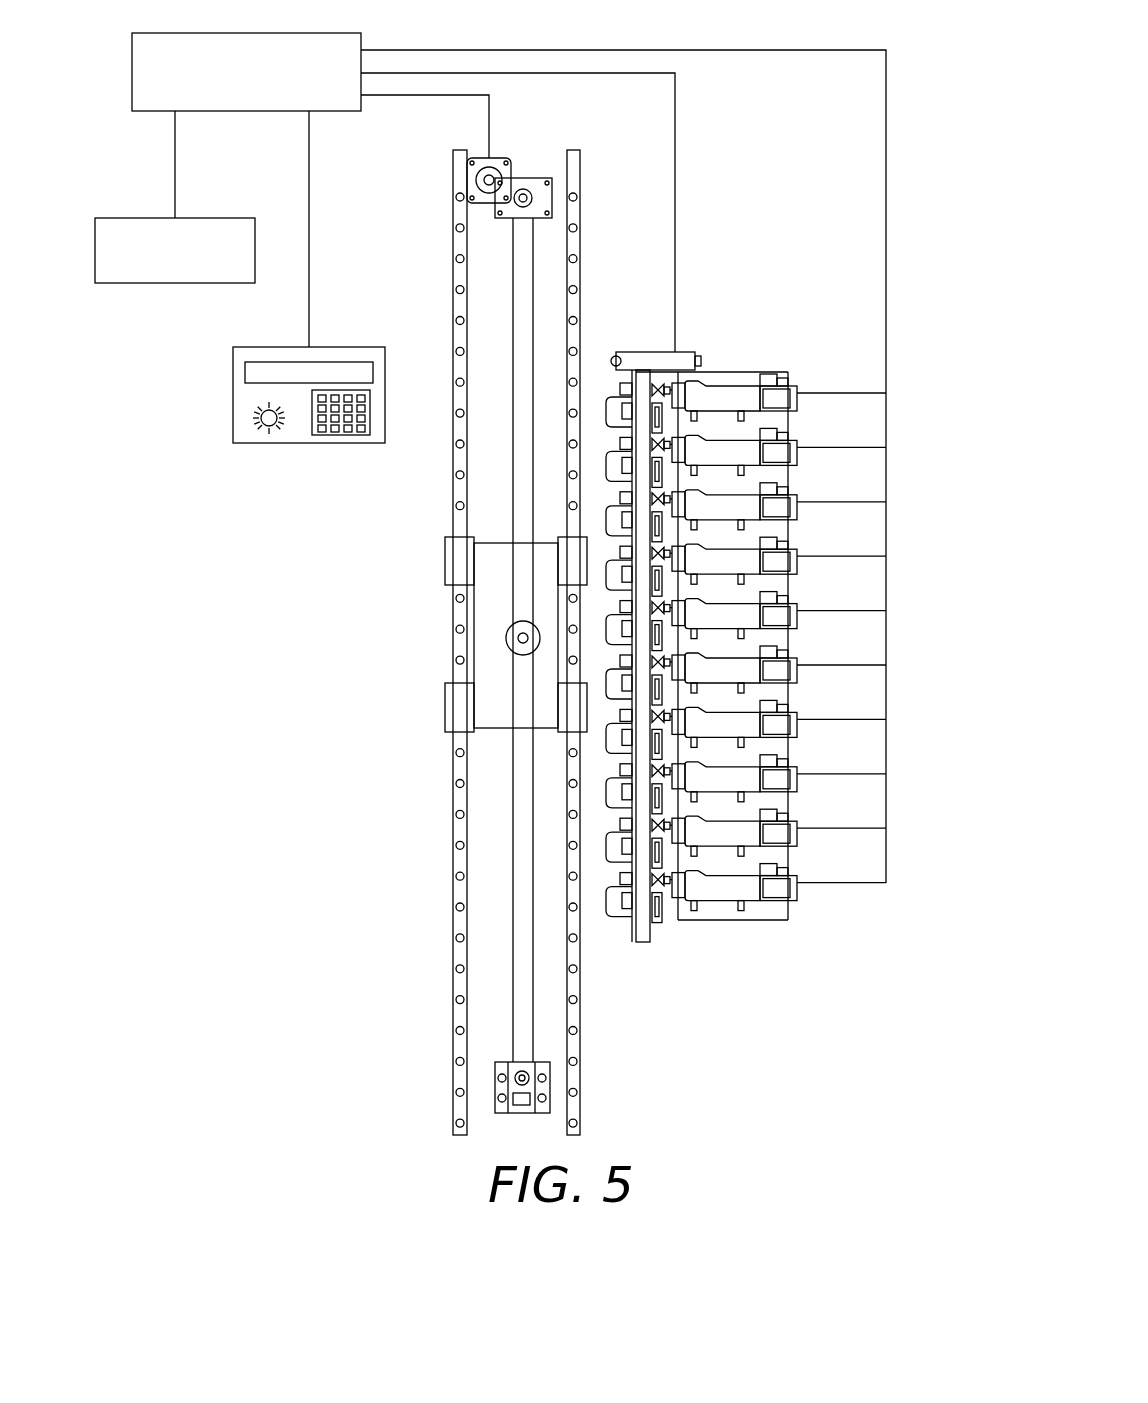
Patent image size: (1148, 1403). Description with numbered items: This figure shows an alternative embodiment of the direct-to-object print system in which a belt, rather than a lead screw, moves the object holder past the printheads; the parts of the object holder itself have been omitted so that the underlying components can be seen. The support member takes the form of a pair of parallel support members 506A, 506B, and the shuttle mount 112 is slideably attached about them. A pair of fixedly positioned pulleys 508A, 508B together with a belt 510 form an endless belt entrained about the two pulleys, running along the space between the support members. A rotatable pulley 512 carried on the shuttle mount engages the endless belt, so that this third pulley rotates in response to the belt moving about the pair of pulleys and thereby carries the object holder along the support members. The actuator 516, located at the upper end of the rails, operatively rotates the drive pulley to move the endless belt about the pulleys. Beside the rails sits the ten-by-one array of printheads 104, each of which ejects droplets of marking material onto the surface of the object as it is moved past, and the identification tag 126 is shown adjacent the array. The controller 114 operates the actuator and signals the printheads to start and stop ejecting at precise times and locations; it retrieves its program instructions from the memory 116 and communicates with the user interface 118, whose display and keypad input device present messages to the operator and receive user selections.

The array of printheads 104 is at (762, 362).
The shuttle mount 112 is at (497, 728).
The controller 114 is at (333, 111).
The memory 116 is at (178, 283).
The user interface 118 is at (309, 443).
The identification tag 126 is at (690, 352).
The support member 506A is at (453, 1073).
The support member 506B is at (580, 1073).
The fixedly positioned pulley 508A is at (522, 220).
The fixedly positioned pulley 508B is at (523, 1062).
The belt 510 is at (535, 278).
The rotatable pulley 512 is at (506, 634).
The actuator 516 is at (497, 158).